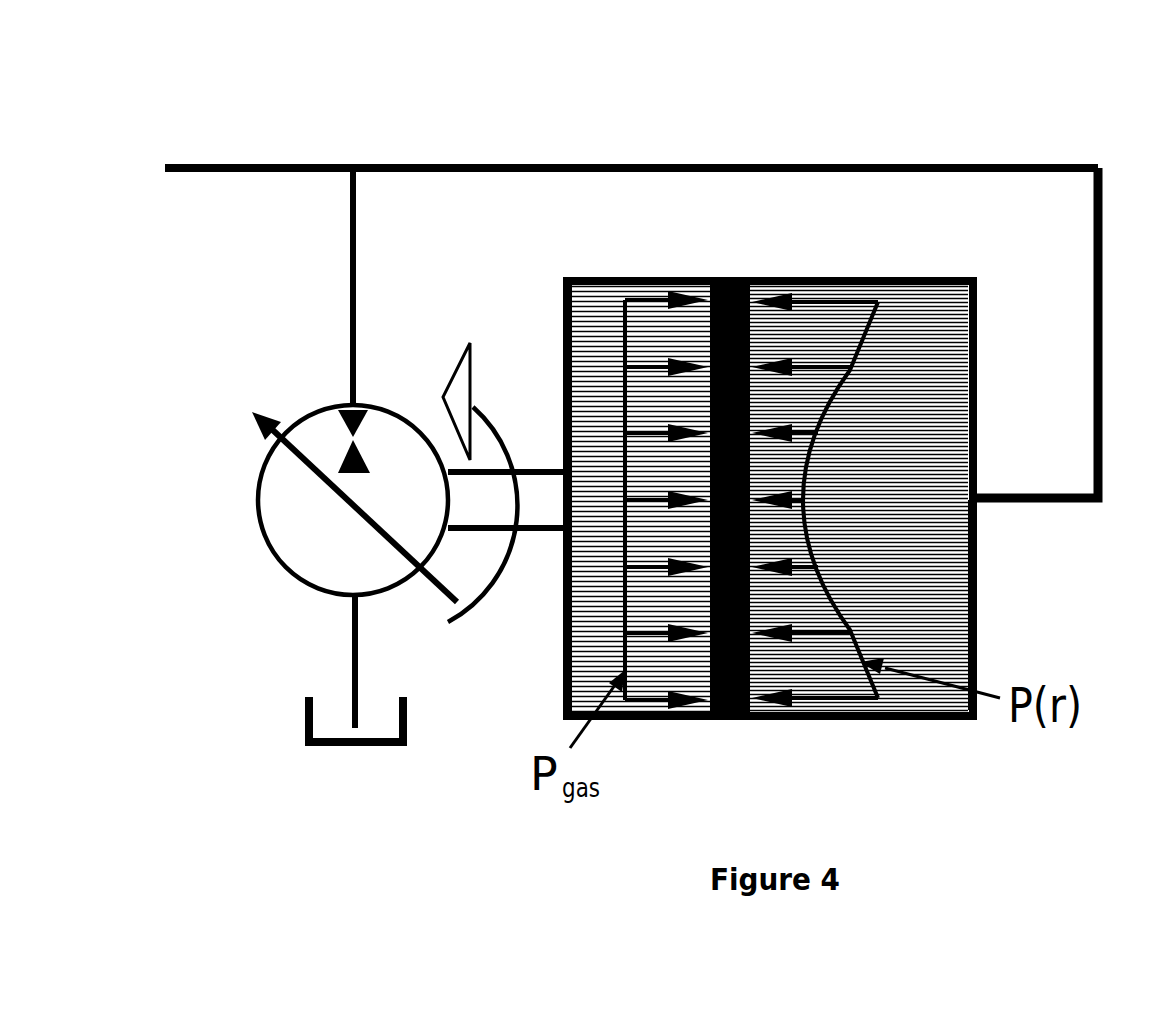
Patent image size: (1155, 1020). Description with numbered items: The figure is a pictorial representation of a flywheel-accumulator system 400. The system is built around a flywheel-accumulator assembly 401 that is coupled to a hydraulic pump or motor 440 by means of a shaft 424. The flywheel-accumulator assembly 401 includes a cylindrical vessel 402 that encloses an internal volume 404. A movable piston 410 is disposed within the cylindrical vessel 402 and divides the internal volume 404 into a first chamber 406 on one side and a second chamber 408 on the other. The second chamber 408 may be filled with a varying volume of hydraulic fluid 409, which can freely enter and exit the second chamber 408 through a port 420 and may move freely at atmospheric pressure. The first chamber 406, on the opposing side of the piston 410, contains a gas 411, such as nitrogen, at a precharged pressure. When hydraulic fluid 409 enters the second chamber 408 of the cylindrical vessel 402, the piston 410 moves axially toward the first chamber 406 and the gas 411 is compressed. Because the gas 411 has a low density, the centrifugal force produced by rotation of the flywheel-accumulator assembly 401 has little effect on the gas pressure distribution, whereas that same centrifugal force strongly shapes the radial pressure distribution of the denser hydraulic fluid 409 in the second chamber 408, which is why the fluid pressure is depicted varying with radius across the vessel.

The flywheel-accumulator system 400 is at (280, 114).
The flywheel-accumulator assembly 401 is at (843, 742).
The cylindrical vessel 402 is at (858, 278).
The internal volume 404 is at (930, 320).
The first chamber 406 is at (583, 307).
The second chamber 408 is at (795, 305).
The hydraulic fluid 409 is at (938, 625).
The movable piston 410 is at (737, 732).
The gas 411 is at (588, 650).
The port 420 is at (990, 510).
The shaft 424 is at (535, 502).
The hydraulic pump or motor 440 is at (292, 503).